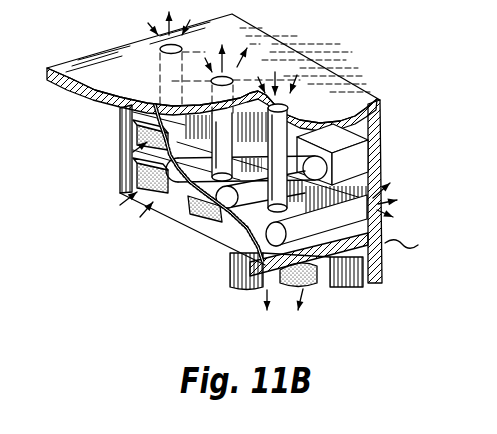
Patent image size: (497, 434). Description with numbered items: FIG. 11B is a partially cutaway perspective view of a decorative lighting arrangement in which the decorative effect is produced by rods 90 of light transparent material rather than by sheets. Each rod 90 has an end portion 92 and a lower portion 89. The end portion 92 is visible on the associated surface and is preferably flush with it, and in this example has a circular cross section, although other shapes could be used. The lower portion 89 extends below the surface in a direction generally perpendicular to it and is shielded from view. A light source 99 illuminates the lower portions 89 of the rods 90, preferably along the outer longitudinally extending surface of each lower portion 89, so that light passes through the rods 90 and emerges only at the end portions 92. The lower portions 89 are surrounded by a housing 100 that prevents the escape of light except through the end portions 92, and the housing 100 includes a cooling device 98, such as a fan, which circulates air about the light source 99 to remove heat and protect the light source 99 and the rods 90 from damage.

The lower portion 89 is at (313, 226).
The rod 90 is at (240, 240).
The end portion 92 is at (170, 54).
The cooling device 98 is at (257, 285).
The light source 99 is at (350, 160).
The housing 100 is at (128, 118).